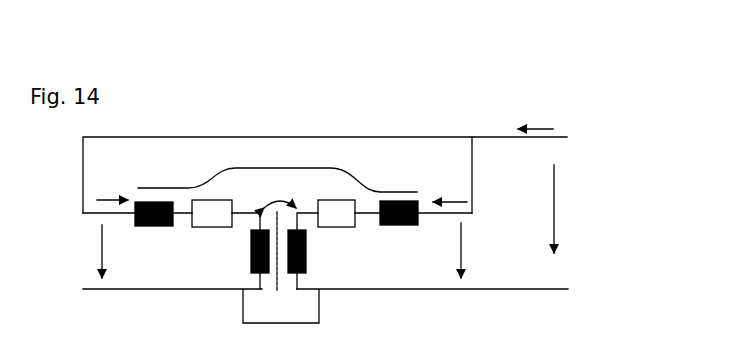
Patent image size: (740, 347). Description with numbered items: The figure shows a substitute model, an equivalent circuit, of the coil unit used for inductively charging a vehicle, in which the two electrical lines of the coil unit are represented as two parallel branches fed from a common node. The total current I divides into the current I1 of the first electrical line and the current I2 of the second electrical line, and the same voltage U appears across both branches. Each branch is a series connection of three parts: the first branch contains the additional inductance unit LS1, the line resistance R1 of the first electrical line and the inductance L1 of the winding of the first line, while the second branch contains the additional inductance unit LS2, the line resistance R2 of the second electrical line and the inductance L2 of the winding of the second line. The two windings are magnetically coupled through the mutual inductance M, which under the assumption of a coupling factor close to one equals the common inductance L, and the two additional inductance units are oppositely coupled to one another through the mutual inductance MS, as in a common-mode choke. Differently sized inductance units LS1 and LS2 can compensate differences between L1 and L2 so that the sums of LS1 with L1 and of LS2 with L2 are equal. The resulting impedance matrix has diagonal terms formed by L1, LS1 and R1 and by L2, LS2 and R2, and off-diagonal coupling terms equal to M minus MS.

The line resistance of the first electrical line R1 is at (212, 230).
The line resistance of the second electrical line R2 is at (342, 231).
The inductance of the winding of the first electrical line L1 is at (245, 252).
The inductance of the winding of the second electrical line L2 is at (312, 253).
The mutual inductance M is at (280, 192).
The mutual inductance of the additional inductance units MS is at (277, 167).
The additional inductance unit of the first electrical line LS1 is at (157, 169).
The additional inductance unit of the second electrical line LS2 is at (402, 181).
The current of the first electrical line I1 is at (112, 184).
The current of the second electrical line I2 is at (450, 182).
The total current I is at (535, 112).
The voltage U is at (325, 221).